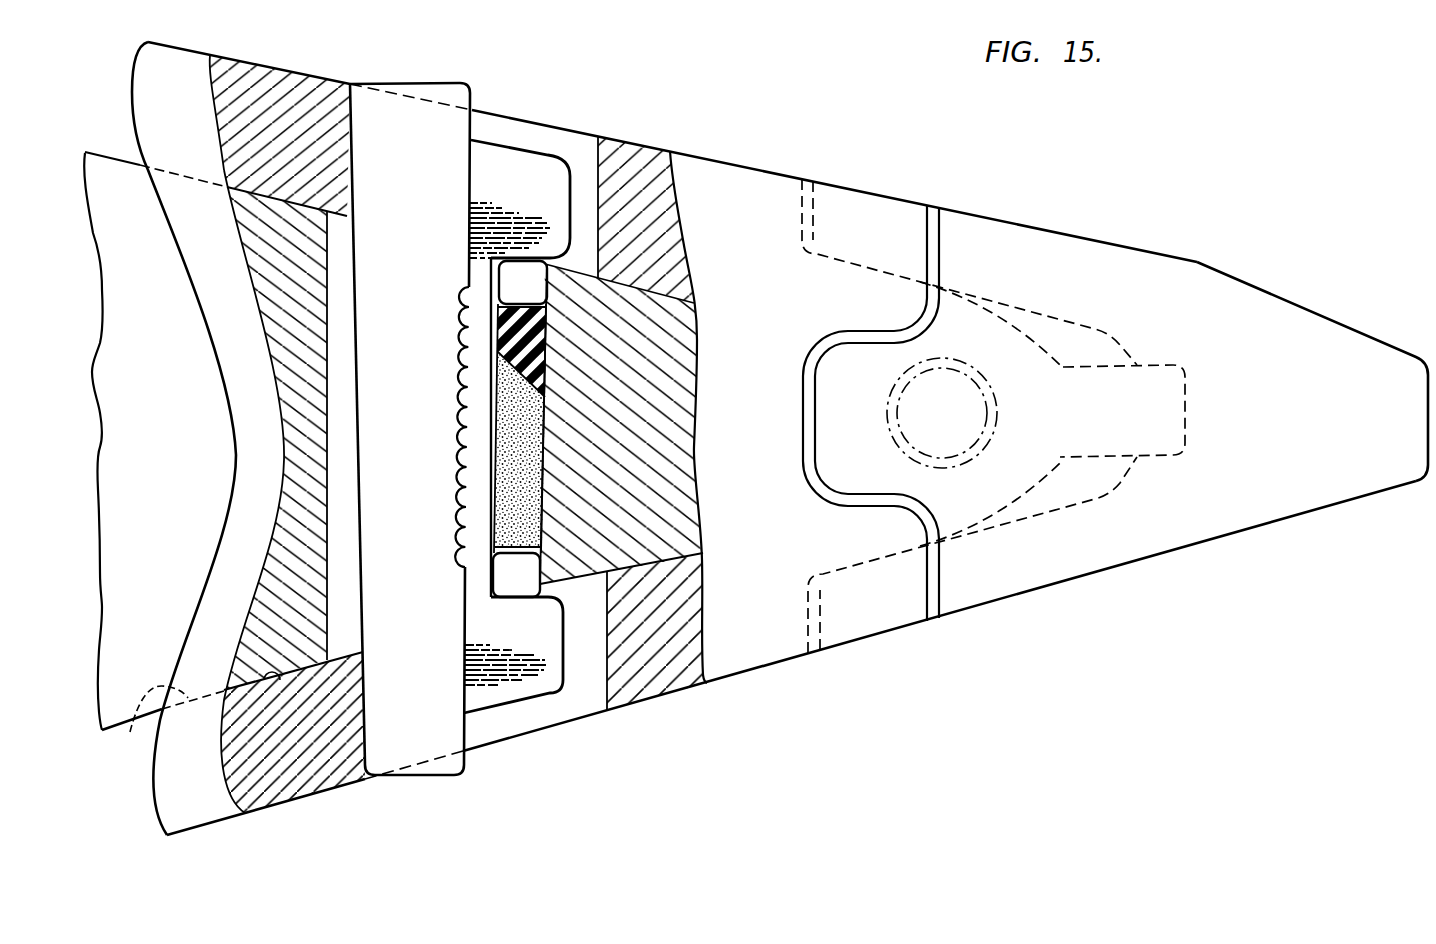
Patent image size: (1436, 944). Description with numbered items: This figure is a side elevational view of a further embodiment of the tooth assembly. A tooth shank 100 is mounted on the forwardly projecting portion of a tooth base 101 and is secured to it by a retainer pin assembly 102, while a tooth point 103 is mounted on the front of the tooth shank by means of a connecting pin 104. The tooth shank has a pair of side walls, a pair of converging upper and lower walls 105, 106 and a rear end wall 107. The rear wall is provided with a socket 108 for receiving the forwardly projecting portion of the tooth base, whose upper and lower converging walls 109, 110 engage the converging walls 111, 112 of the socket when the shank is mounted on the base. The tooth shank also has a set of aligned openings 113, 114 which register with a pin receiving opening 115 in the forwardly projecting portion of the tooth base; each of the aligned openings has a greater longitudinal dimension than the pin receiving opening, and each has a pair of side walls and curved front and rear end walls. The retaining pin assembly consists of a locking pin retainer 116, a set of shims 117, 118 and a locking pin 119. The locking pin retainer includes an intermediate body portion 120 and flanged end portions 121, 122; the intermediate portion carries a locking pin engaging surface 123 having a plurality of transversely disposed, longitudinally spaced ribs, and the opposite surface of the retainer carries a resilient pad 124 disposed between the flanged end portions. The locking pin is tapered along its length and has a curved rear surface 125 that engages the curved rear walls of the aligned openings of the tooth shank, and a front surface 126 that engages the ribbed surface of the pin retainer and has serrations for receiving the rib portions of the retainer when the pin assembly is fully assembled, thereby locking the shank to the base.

The tooth shank 100 is at (808, 138).
The tooth base 101 is at (177, 505).
The retainer pin assembly 102 is at (486, 134).
The tooth point 103 is at (1203, 221).
The connecting pin 104 is at (992, 424).
The upper wall 105 is at (697, 124).
The lower wall 106 is at (662, 697).
The rear end wall 107 is at (131, 113).
The socket 108 is at (163, 722).
The upper converging wall 109 is at (113, 128).
The lower converging wall 110 is at (264, 680).
The converging wall of socket 111 is at (327, 214).
The converging wall of socket 112 is at (333, 652).
The aligned opening 113 is at (572, 142).
The aligned opening 114 is at (535, 722).
The pin receiving opening 115 is at (343, 378).
The locking pin retainer 116 is at (533, 217).
The shim 117 is at (539, 295).
The shim 118 is at (531, 589).
The locking pin 119 is at (420, 305).
The intermediate body portion 120 is at (483, 436).
The flanged end portion 121 is at (553, 218).
The flanged end portion 122 is at (537, 675).
The locking pin engaging surface 123 is at (459, 418).
The resilient pad 124 is at (530, 505).
The curved rear surface 125 is at (370, 500).
The front surface 126 is at (466, 634).